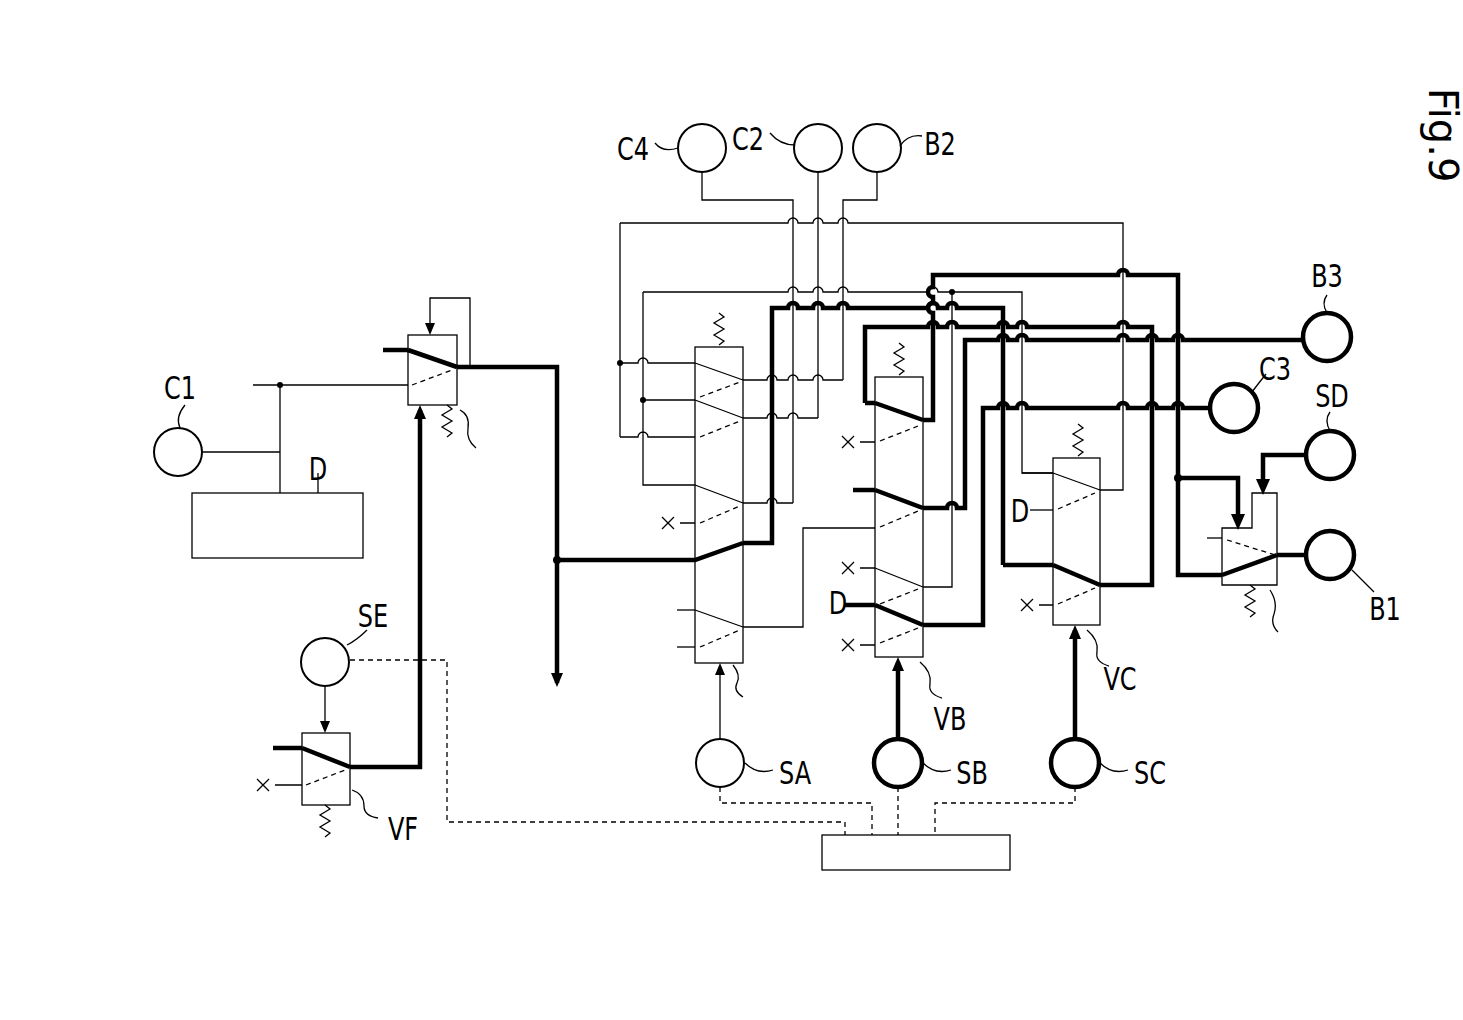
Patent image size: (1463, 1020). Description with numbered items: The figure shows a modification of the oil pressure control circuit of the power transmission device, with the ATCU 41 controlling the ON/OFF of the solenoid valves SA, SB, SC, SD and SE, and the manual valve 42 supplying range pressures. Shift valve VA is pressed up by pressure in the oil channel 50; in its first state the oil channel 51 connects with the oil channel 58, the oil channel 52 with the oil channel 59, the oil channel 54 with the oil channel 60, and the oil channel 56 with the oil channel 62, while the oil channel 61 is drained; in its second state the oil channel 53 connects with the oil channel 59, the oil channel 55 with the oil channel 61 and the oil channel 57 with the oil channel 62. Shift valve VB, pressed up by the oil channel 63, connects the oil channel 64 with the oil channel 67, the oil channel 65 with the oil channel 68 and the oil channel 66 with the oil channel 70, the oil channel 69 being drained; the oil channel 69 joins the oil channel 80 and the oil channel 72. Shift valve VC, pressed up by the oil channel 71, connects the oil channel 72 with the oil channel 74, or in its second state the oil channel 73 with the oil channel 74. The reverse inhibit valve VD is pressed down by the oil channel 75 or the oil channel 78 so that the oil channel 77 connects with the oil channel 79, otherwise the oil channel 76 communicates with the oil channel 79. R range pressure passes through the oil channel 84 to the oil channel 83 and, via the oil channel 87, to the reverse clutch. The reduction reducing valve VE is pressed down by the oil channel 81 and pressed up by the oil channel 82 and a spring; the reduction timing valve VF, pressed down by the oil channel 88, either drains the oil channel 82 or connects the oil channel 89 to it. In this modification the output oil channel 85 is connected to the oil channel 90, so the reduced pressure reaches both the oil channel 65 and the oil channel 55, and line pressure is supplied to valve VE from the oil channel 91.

The ATCU 41 is at (822, 854).
The manual valve 42 is at (230, 560).
The oil channel 50 is at (718, 729).
The oil channel 51 is at (666, 363).
The oil channel 52 is at (656, 384).
The oil channel 53 is at (657, 392).
The oil channel 54 is at (675, 495).
The oil channel 55 is at (680, 555).
The oil channel 56 is at (676, 612).
The oil channel 57 is at (676, 652).
The oil channel 58 is at (880, 198).
The oil channel 59 is at (818, 190).
The oil channel 60 is at (702, 198).
The oil channel 61 is at (757, 548).
The oil channel 62 is at (775, 630).
The oil channel 63 is at (894, 724).
The oil channel 64 is at (862, 376).
The oil channel 65 is at (862, 500).
The oil channel 66 is at (841, 653).
The oil channel 67 is at (1183, 270).
The oil channel 68 is at (1047, 343).
The oil channel 69 is at (953, 570).
The oil channel 70 is at (955, 629).
The oil channel 71 is at (1080, 706).
The oil channel 72 is at (1030, 472).
The oil channel 73 is at (1040, 514).
The oil channel 74 is at (1044, 223).
The oil channel 75 is at (1194, 484).
The oil channel 76 is at (1213, 540).
The oil channel 77 is at (1213, 590).
The oil channel 78 is at (1268, 468).
The oil channel 79 is at (1289, 556).
The oil channel 80 is at (868, 295).
The oil channel 81 is at (428, 330).
The oil channel 82 is at (422, 545).
The oil channel 83 is at (384, 395).
The oil channel 84 is at (280, 478).
The oil channel 85 is at (460, 372).
The oil channel 87 is at (255, 452).
The oil channel 88 is at (330, 702).
The oil channel 89 is at (293, 749).
The oil channel 90 is at (547, 365).
The oil channel 91 is at (395, 348).